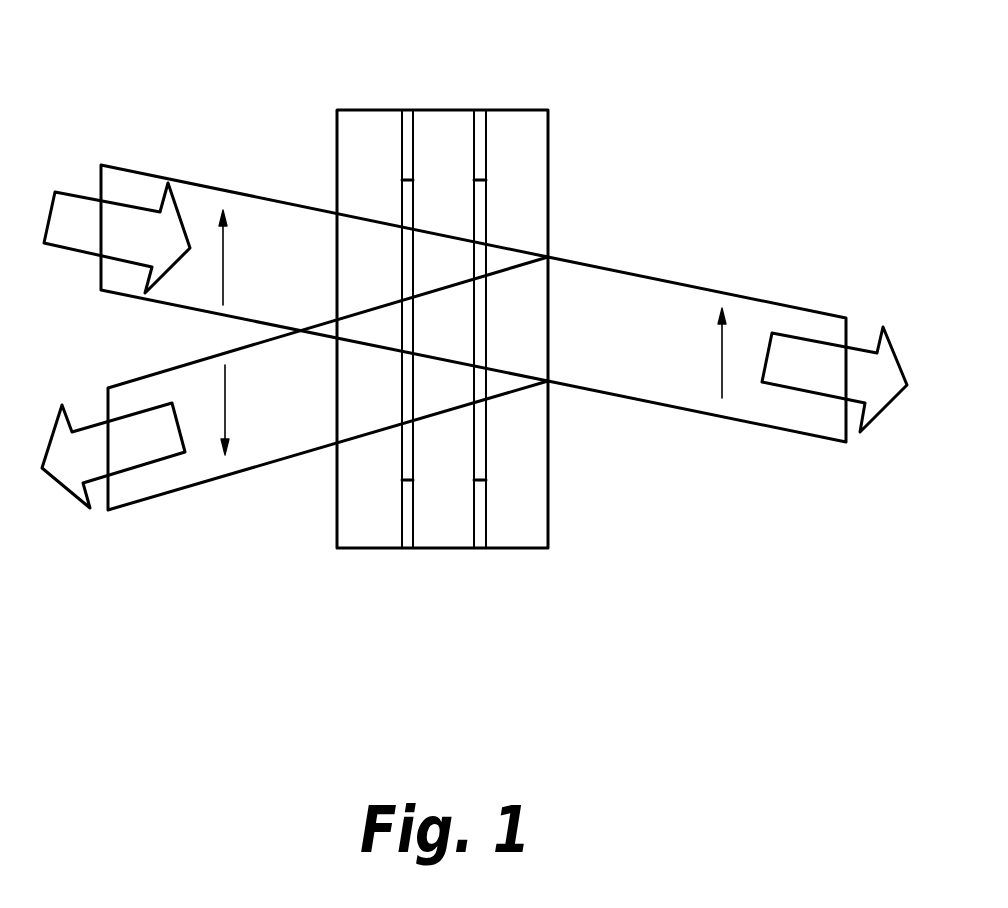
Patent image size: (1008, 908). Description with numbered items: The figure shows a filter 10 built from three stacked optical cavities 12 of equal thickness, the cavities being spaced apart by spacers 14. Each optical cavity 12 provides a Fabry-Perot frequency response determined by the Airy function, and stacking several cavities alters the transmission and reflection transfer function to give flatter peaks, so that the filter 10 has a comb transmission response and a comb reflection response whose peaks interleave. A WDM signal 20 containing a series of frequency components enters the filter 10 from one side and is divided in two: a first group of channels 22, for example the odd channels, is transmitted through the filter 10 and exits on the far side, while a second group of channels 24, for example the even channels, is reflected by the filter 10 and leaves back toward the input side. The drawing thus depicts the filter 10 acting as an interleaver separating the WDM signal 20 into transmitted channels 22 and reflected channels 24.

The filter 10 is at (572, 152).
The optical cavity 12 is at (365, 135).
The spacer 14 is at (478, 120).
The WDM signal 20 is at (259, 218).
The first group of channels 22 is at (695, 302).
The second group of channels 24 is at (265, 432).